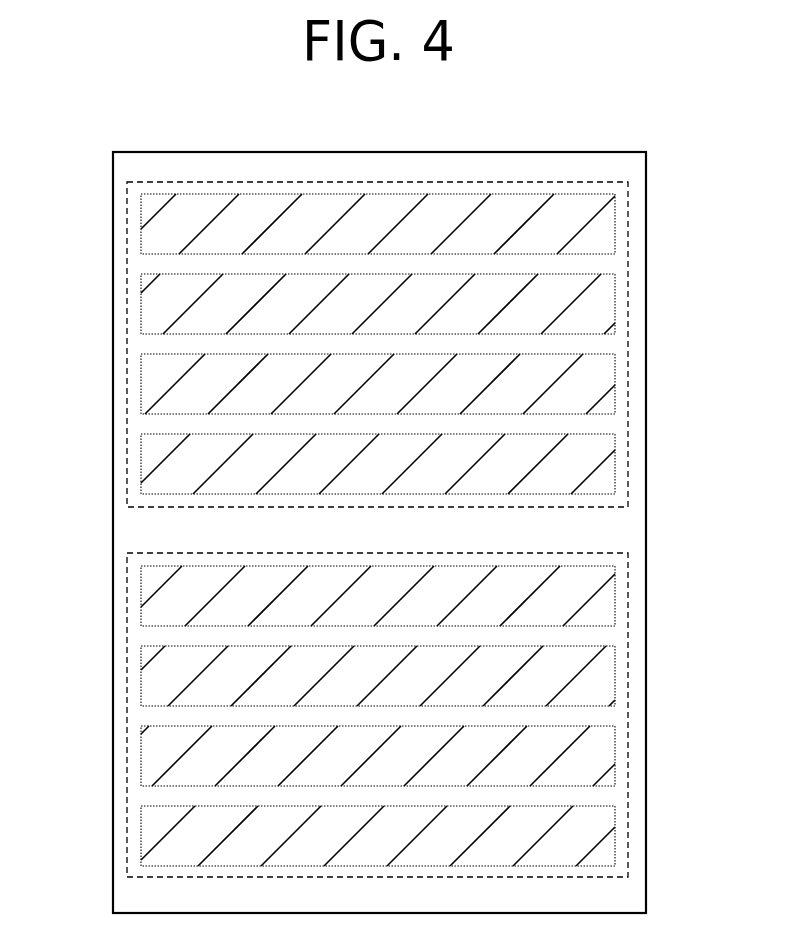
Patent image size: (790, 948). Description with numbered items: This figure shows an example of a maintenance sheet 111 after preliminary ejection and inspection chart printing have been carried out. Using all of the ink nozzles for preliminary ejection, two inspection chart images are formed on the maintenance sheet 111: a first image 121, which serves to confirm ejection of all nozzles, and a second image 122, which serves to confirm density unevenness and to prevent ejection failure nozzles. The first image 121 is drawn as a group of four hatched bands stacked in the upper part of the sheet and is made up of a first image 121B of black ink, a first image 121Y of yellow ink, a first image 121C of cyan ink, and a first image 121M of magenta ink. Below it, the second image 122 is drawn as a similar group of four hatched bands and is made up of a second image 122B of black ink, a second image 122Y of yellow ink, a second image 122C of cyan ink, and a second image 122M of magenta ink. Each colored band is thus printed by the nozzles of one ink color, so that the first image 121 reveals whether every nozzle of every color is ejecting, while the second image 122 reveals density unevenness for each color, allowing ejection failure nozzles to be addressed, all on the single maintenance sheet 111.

The maintenance sheet 111 is at (588, 152).
The first image 121 is at (628, 227).
The first image of black ink 121B is at (141, 225).
The first image of yellow ink 121Y is at (141, 305).
The first image of cyan ink 121C is at (141, 385).
The first image of magenta ink 121M is at (141, 465).
The second image 122 is at (628, 597).
The second image of black ink 122B is at (141, 598).
The second image of yellow ink 122Y is at (141, 678).
The second image of cyan ink 122C is at (141, 758).
The second image of magenta ink 122M is at (141, 838).